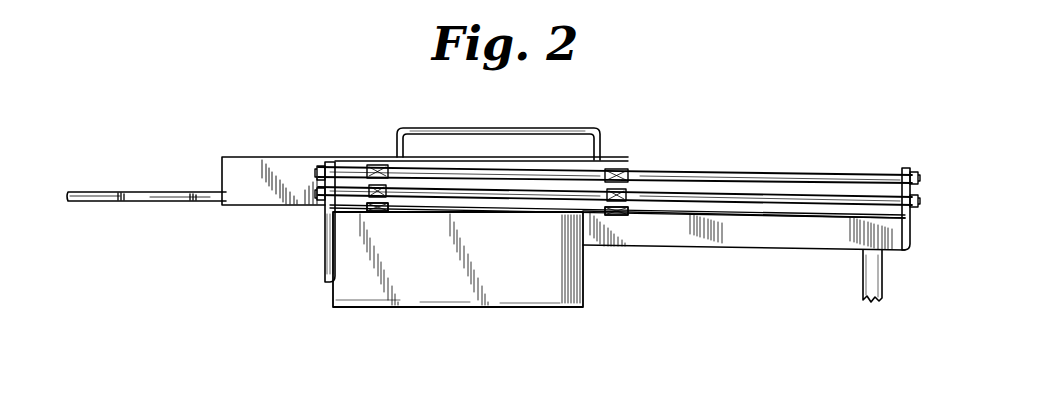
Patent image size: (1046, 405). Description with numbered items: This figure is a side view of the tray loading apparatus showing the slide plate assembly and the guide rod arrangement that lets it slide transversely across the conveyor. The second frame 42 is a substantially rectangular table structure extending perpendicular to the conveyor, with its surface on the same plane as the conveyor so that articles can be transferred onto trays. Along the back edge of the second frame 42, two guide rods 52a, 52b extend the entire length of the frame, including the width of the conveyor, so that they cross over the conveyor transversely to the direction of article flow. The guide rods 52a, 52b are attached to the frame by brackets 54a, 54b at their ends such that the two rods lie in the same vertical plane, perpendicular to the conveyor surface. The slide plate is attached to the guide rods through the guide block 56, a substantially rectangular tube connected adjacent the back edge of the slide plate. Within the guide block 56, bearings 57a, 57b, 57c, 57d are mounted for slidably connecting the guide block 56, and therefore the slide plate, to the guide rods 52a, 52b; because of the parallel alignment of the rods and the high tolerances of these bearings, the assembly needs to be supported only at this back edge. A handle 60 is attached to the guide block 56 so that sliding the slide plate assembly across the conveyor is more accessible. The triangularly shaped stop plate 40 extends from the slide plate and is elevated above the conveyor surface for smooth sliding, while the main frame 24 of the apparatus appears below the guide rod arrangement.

The frame 24 is at (525, 287).
The stop plate 40 is at (150, 203).
The second frame 42 is at (743, 233).
The guide rod 52a is at (692, 170).
The guide rod 52b is at (772, 200).
The bracket 54a is at (327, 252).
The bracket 54b is at (912, 168).
The guide block 56 is at (271, 158).
The bearing 57a is at (617, 166).
The bearing 57b is at (375, 165).
The bearing 57c is at (375, 213).
The bearing 57d is at (608, 215).
The handle 60 is at (558, 130).